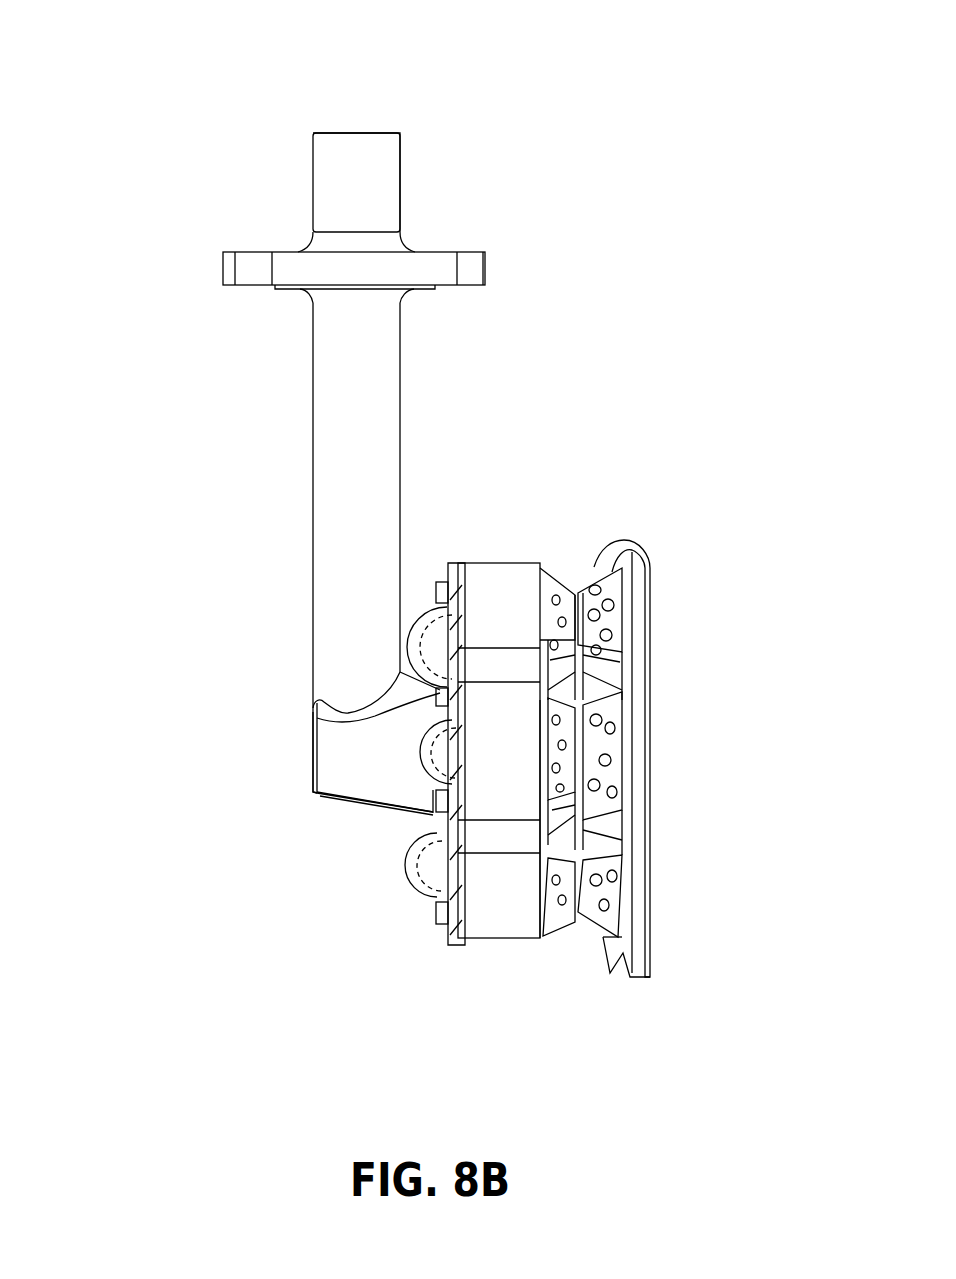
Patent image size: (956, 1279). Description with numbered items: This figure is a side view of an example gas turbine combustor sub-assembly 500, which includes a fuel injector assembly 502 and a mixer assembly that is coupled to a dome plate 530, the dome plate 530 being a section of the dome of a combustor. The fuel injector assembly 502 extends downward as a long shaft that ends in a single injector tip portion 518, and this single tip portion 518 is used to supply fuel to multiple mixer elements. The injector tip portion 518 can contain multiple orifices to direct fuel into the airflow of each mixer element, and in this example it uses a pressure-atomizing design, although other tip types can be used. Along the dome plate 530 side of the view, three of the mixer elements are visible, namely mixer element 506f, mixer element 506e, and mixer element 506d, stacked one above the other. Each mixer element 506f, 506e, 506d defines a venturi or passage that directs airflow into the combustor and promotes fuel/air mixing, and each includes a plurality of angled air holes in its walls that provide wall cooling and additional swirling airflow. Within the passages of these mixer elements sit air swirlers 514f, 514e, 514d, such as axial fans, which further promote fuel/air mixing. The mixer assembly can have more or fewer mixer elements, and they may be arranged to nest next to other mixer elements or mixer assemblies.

The gas turbine combustor sub-assembly 500 is at (182, 50).
The fuel injector assembly 502 is at (272, 377).
The injector tip portion 518 is at (300, 798).
The air swirler 514f is at (433, 640).
The air swirler 514e is at (440, 775).
The air swirler 514d is at (430, 882).
The mixer element 506f is at (583, 585).
The mixer element 506e is at (623, 747).
The mixer element 506d is at (608, 898).
The dome plate 530 is at (622, 555).